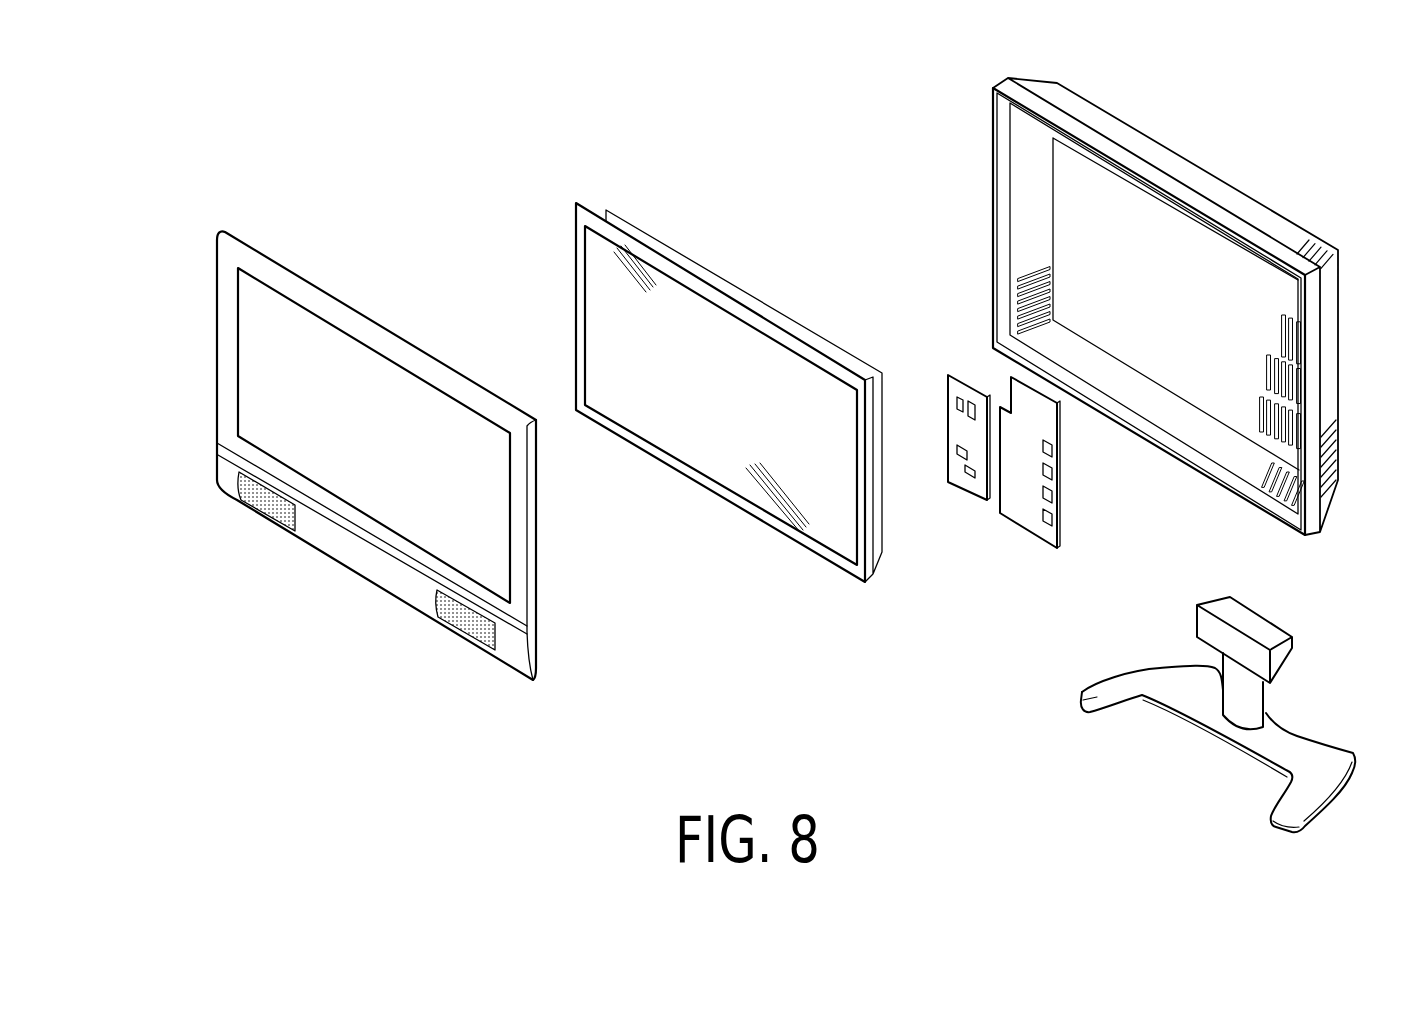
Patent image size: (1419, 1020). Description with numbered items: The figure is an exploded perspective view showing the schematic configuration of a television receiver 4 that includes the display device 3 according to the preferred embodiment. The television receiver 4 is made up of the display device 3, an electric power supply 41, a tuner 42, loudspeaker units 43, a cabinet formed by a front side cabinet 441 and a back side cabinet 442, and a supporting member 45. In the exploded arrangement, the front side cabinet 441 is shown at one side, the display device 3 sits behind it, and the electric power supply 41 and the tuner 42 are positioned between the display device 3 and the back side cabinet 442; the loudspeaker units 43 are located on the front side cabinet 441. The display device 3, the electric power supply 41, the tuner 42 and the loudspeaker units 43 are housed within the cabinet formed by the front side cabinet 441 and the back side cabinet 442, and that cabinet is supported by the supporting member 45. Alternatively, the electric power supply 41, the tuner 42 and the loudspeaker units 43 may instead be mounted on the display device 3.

The television receiver 4 is at (1115, 855).
The display device 3 is at (657, 240).
The electric power supply 41 is at (962, 491).
The tuner 42 is at (1060, 475).
The loudspeaker units 43 is at (246, 512).
The front side cabinet 441 is at (304, 280).
The back side cabinet 442 is at (1108, 108).
The supporting member 45 is at (1297, 734).